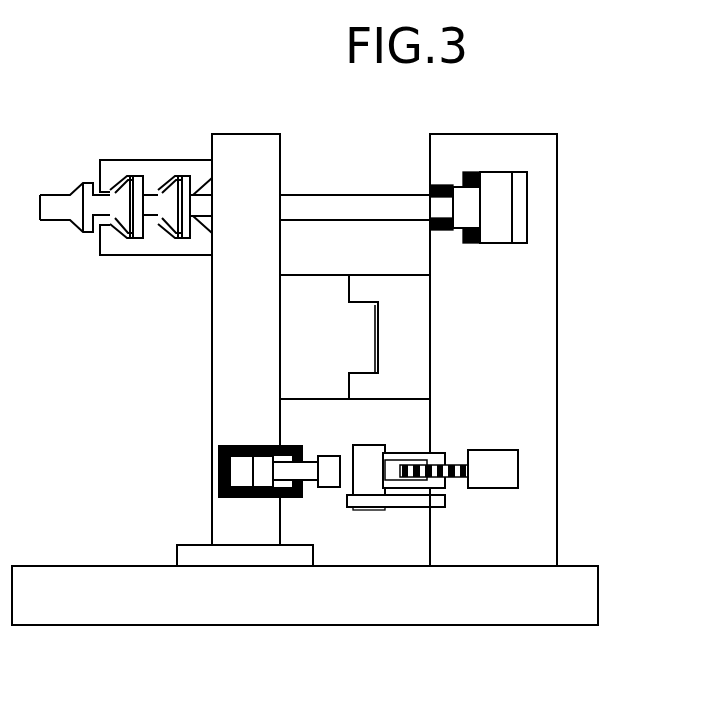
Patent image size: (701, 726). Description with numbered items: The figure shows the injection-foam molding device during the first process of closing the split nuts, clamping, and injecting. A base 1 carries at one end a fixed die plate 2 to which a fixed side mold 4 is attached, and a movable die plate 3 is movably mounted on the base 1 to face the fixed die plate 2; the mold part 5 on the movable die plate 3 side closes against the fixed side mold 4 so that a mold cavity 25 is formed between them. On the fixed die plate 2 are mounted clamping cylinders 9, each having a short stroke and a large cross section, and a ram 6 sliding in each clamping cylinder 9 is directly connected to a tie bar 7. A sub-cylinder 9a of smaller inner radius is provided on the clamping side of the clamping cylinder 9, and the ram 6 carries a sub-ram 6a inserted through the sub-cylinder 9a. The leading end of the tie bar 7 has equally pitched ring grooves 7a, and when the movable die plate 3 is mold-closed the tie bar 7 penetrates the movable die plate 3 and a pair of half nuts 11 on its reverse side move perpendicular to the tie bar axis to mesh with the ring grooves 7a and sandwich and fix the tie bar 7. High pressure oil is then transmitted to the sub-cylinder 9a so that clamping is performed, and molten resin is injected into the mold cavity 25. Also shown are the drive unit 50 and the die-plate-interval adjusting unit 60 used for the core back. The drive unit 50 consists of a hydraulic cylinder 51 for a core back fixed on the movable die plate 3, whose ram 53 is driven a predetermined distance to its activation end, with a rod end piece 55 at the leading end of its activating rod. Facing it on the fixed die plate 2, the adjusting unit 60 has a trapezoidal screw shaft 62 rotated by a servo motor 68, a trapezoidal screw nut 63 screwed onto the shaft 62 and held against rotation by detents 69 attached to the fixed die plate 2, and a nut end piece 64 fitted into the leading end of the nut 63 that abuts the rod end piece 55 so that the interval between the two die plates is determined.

The base 1 is at (588, 563).
The fixed die plate 2 is at (557, 322).
The movable die plate 3 is at (212, 312).
The fixed side mold 4 is at (417, 375).
The holding portion 5 is at (297, 340).
The ram 6 is at (502, 202).
The sub-ram 6a is at (462, 198).
The tie bar 7 is at (327, 193).
The ring grooves 7a is at (78, 187).
The clamping cylinder 9 is at (520, 238).
The sub-cylinder 9a is at (440, 184).
The half nut 11 is at (117, 255).
The mold cavity 25 is at (378, 308).
The drive unit 50 is at (237, 457).
The hydraulic cylinder for a core back 51 is at (220, 498).
The ram 53 is at (267, 473).
The rod end piece 55 is at (328, 489).
The die-plate-interval adjusting unit 60 is at (476, 527).
The trapezoidal screw shaft 62 is at (453, 478).
The trapezoidal screw nut 63 is at (403, 450).
The nut end piece 64 is at (354, 488).
The servo motor 68 is at (520, 473).
The detent 69 is at (403, 508).